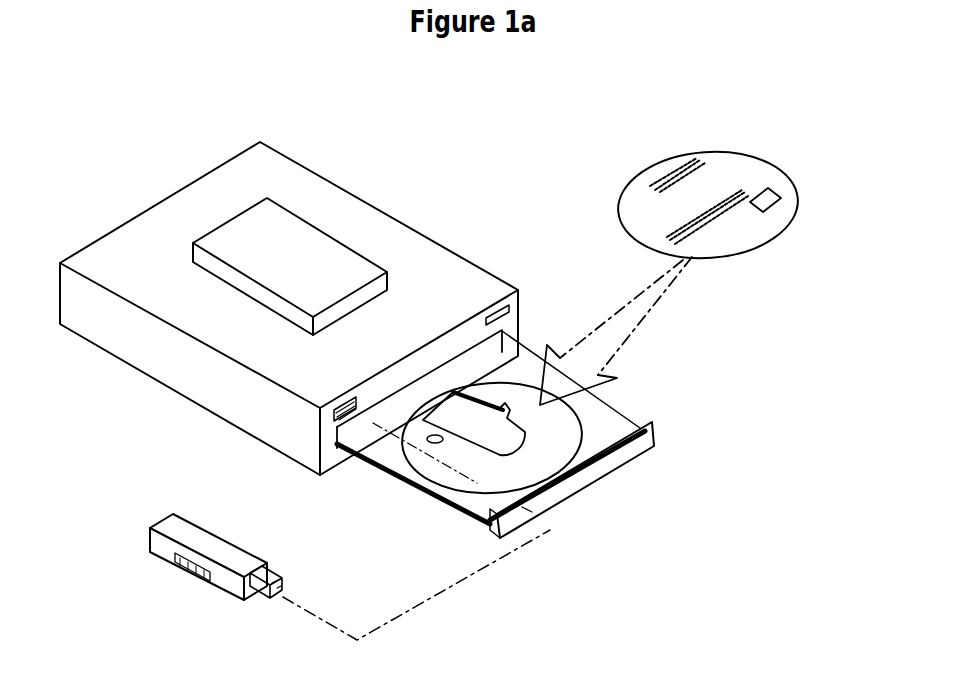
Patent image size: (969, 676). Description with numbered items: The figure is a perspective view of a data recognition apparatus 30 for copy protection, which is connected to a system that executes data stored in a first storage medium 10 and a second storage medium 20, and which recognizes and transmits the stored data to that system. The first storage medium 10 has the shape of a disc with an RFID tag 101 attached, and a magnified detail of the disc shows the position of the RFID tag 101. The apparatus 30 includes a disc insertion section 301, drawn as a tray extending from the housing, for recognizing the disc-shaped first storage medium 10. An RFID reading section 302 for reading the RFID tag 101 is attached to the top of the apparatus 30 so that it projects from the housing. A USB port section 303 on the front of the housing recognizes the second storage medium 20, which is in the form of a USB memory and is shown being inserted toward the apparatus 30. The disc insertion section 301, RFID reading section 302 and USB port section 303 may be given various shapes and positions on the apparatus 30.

The data recognition apparatus 30 is at (320, 176).
The RFID reading section 302 is at (227, 230).
The USB port section 303 is at (338, 415).
The disc insertion section 301 is at (645, 466).
The first storage medium 10 is at (630, 174).
The RFID tag 101 is at (778, 195).
The second storage medium 20 is at (220, 590).